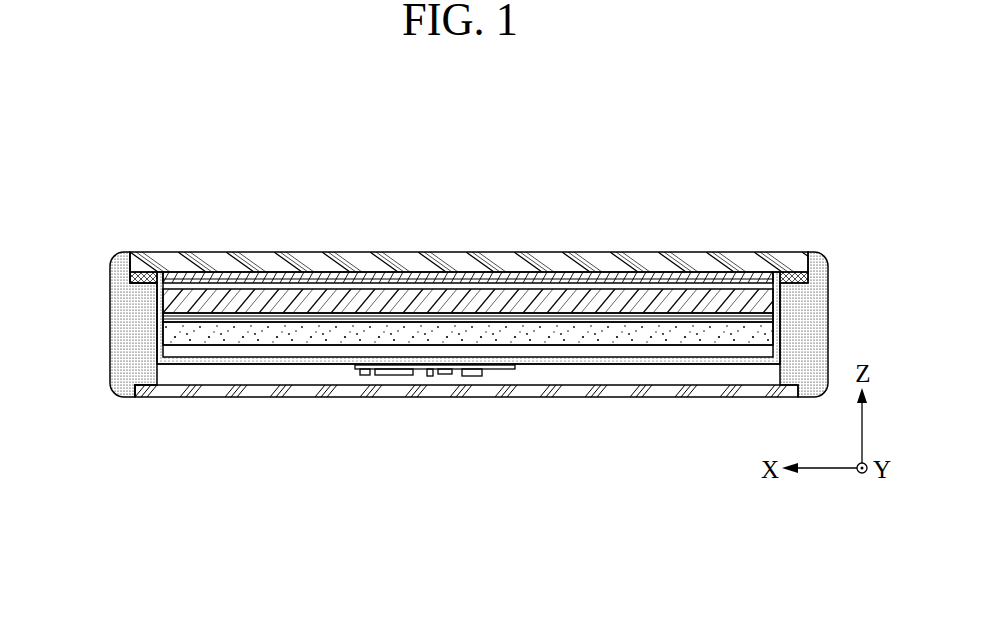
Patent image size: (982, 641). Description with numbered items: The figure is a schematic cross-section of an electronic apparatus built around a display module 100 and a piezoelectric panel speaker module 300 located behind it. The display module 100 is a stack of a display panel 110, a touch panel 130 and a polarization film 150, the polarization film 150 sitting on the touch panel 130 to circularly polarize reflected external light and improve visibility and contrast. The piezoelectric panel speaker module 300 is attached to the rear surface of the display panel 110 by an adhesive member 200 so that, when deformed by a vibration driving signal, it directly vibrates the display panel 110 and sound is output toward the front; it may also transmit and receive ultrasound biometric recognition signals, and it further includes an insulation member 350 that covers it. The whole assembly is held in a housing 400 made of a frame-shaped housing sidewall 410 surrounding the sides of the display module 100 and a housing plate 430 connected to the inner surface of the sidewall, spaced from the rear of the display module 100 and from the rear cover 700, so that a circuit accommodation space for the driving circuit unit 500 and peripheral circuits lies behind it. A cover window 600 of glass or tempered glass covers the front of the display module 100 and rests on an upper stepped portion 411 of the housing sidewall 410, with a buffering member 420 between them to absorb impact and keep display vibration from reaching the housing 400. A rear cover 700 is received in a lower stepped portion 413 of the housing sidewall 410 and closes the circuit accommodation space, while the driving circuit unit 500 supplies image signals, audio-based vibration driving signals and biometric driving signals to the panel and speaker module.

The display module 100 is at (468, 231).
The display panel 110 is at (280, 177).
The touch panel 130 is at (332, 283).
The polarization film 150 is at (272, 278).
The adhesive member 200 is at (478, 318).
The piezoelectric panel speaker module 300 is at (272, 337).
The insulation member 350 is at (318, 323).
The housing 400 is at (434, 340).
The housing sidewall 410 is at (145, 366).
The upper stepped portion 411 is at (130, 285).
The lower stepped portion 413 is at (135, 385).
The buffering member 420 is at (139, 280).
The housing plate 430 is at (198, 366).
The driving circuit unit 500 is at (418, 369).
The cover window 600 is at (206, 260).
The rear cover 700 is at (582, 390).